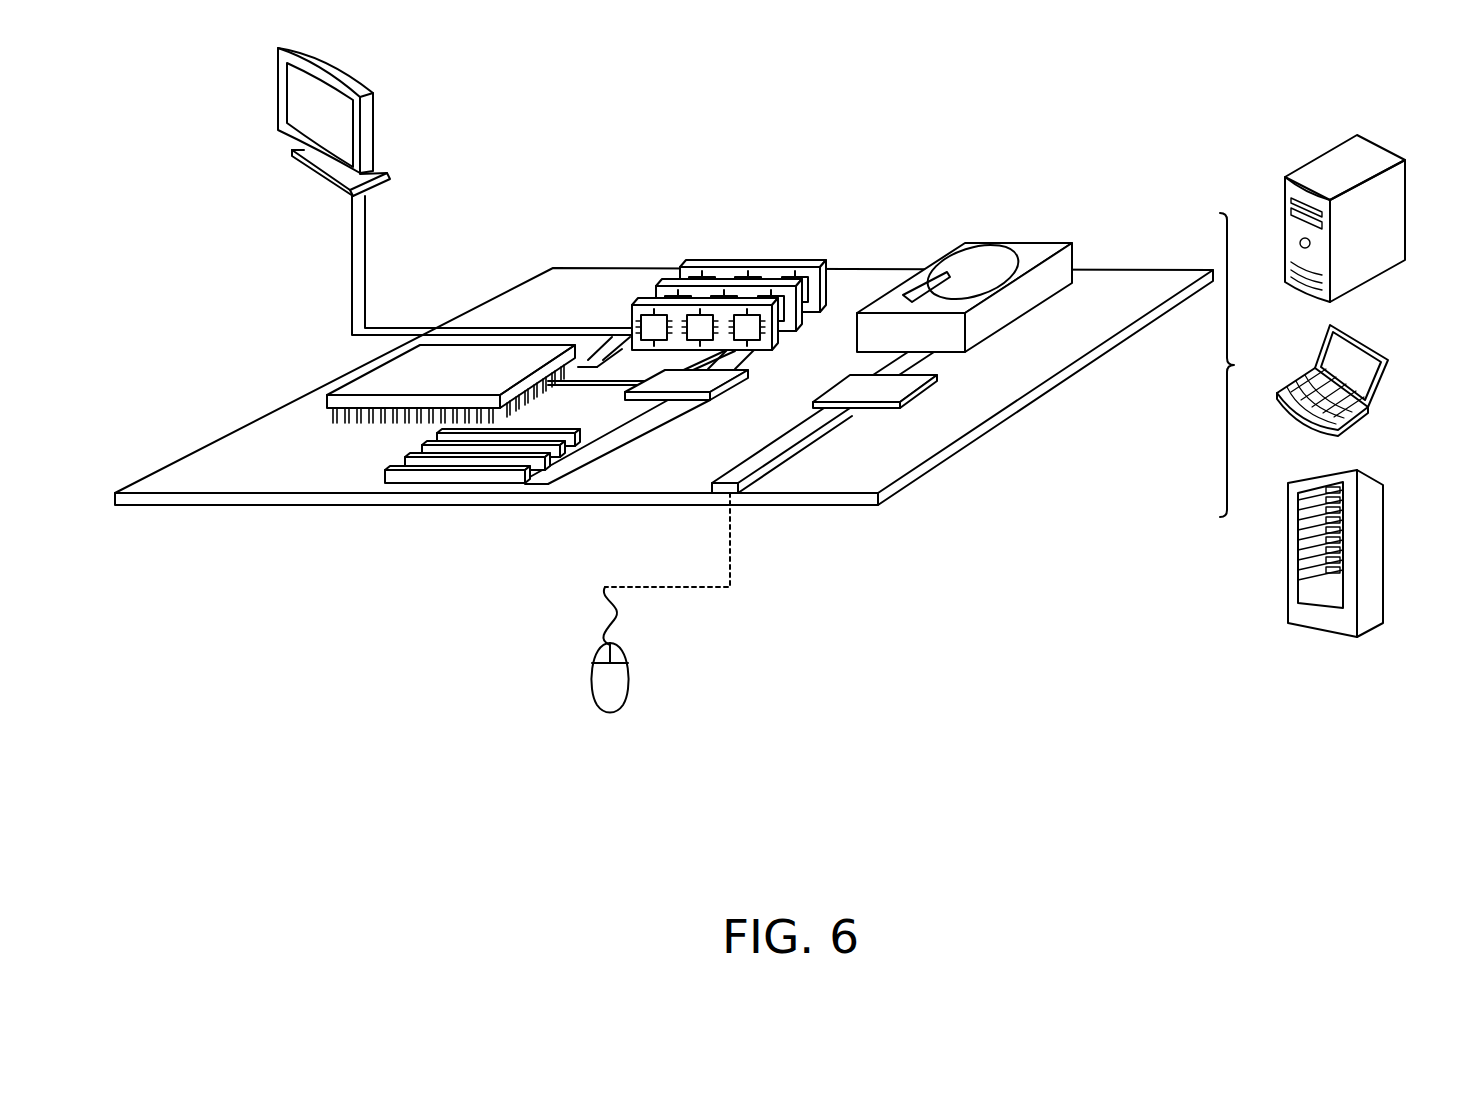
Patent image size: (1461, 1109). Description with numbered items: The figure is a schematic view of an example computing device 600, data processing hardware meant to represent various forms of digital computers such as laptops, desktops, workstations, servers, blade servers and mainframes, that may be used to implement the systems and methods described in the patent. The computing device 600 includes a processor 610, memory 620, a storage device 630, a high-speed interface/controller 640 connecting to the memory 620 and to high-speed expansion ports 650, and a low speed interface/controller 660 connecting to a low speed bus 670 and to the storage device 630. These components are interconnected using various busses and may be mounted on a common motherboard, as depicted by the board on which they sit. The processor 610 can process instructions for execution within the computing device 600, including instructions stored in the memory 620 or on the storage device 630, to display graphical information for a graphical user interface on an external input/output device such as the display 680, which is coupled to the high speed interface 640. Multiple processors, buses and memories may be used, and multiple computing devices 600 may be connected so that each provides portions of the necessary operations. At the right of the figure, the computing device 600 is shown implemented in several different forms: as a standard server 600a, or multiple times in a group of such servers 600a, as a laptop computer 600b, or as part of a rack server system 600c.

The computing device 600 is at (830, 118).
The standard server 600a is at (1313, 157).
The laptop computer 600b is at (1371, 341).
The rack server system 600c is at (1377, 533).
The processor 610 is at (326, 397).
The memory 620 is at (748, 261).
The storage device 630 is at (1013, 241).
The high-speed interface/controller 640 is at (693, 401).
The high-speed expansion ports 650 is at (388, 471).
The low speed interface/controller 660 is at (862, 381).
The low speed bus 670 is at (739, 494).
The display 680 is at (278, 98).